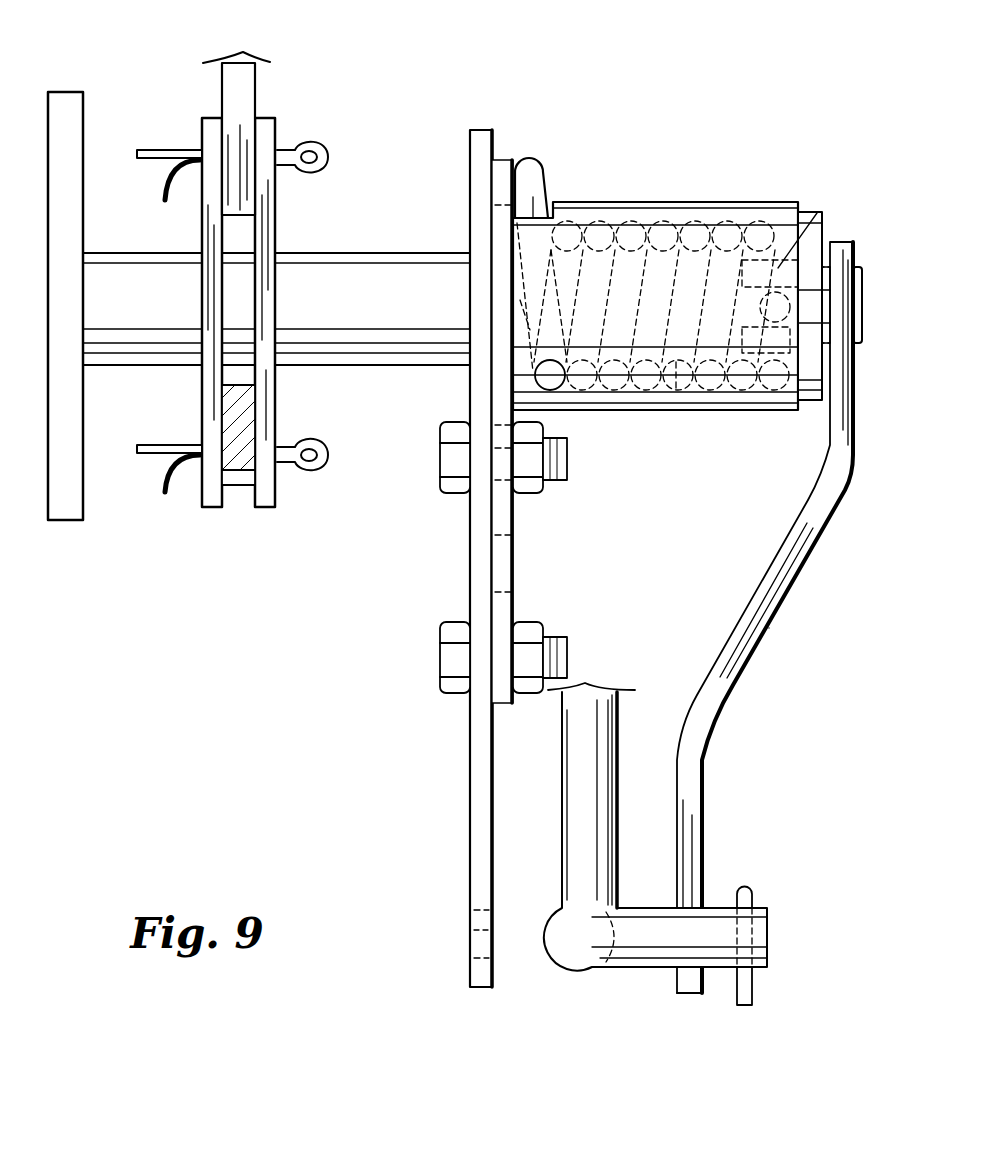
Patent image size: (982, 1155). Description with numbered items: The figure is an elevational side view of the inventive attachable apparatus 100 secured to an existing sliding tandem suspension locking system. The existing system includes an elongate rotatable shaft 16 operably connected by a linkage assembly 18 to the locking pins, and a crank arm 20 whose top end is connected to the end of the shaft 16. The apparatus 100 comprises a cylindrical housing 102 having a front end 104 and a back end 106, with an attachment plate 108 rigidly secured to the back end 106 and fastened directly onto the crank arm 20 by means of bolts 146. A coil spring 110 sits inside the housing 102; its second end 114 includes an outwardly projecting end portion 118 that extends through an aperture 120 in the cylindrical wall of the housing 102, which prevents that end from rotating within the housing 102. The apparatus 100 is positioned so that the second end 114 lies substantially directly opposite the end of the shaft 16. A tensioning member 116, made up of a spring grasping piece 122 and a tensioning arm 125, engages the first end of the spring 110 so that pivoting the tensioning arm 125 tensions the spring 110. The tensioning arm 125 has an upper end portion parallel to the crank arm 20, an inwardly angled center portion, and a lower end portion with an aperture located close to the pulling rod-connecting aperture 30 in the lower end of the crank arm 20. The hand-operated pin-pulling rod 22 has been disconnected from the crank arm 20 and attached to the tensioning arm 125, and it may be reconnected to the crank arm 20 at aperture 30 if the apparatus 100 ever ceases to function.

The elongate rotatable shaft 16 is at (148, 358).
The linkage assembly 18 is at (237, 97).
The crank arm 20 is at (478, 822).
The pin-pulling rod 22 is at (583, 813).
The pulling rod-connecting aperture 30 is at (480, 930).
The attachable apparatus 100 is at (715, 130).
The cylindrical housing 102 is at (680, 205).
The front end 104 is at (803, 210).
The back end 106 is at (512, 237).
The attachment plate 108 is at (503, 523).
The coil spring 110 is at (676, 390).
The second end 114 is at (530, 323).
The tensioning member 116 is at (845, 458).
The outwardly projecting end portion 118 is at (530, 170).
The aperture 120 is at (533, 217).
The spring grasping piece 122 is at (825, 205).
The tensioning arm 125 is at (769, 628).
The bolts 146 is at (452, 485).